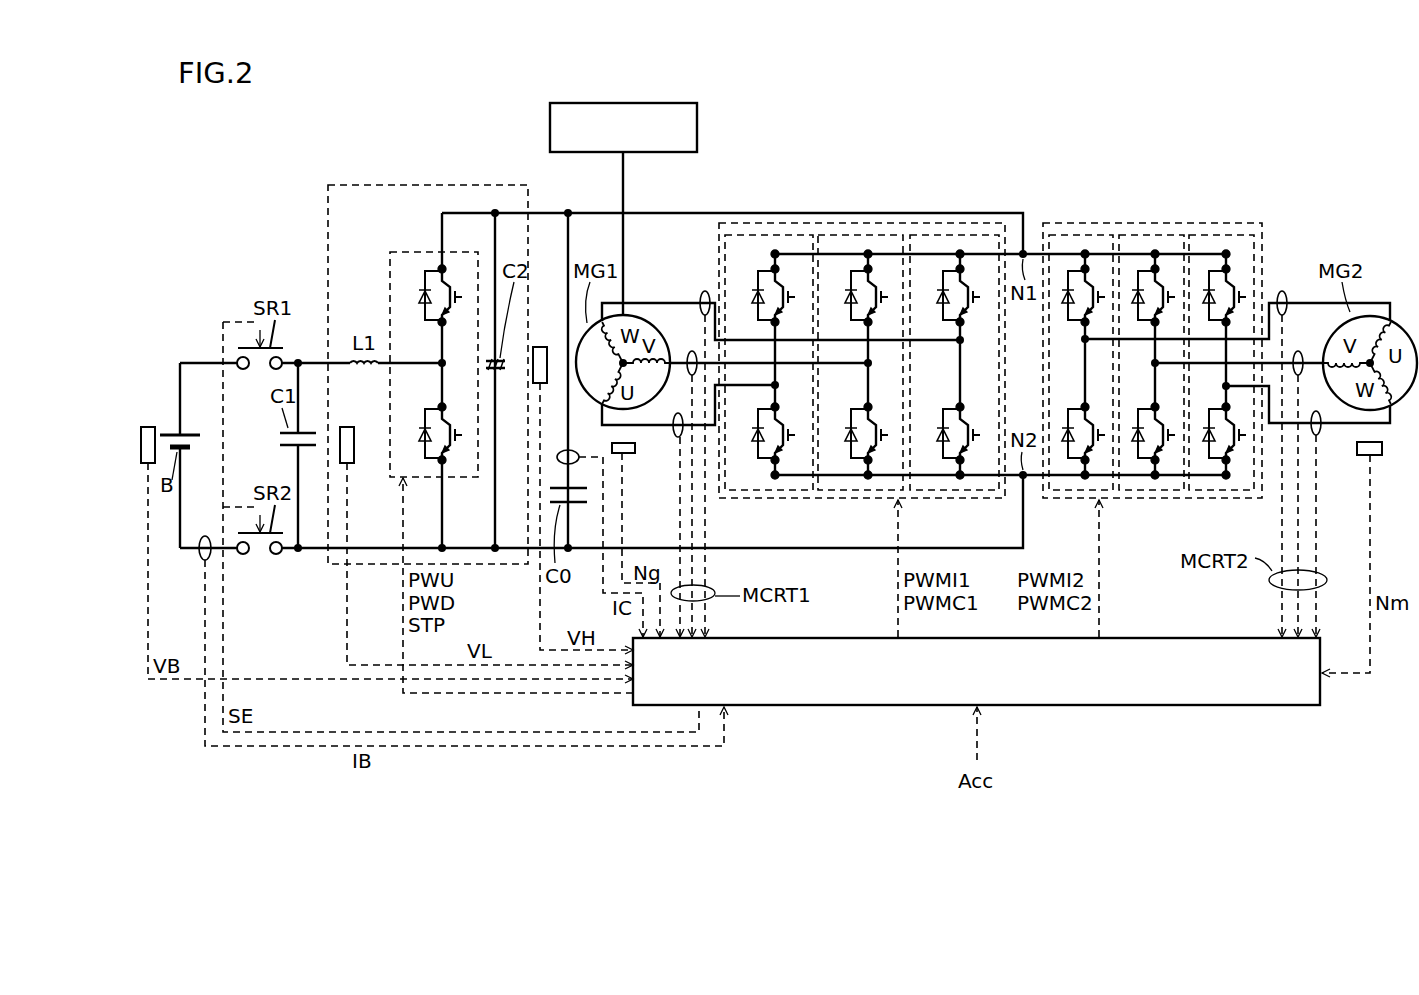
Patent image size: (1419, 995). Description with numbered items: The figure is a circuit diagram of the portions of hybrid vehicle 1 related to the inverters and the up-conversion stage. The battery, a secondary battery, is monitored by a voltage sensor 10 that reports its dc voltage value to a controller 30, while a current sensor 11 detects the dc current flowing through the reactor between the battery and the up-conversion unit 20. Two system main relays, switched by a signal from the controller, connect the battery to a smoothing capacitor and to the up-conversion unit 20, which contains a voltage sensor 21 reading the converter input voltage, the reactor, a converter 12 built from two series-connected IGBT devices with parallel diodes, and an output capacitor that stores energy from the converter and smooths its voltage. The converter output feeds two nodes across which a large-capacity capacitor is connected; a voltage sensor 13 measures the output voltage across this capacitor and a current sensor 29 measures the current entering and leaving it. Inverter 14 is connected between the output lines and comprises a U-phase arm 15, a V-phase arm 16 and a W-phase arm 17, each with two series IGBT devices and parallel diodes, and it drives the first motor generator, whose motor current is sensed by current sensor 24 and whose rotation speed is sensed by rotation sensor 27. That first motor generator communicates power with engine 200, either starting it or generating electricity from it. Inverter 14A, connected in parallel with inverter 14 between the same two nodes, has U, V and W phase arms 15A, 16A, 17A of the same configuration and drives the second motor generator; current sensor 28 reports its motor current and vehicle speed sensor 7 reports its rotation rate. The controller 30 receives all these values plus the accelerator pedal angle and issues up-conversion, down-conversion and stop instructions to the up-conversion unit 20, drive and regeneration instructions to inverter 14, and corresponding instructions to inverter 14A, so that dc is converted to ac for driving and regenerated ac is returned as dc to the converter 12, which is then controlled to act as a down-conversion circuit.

The hybrid vehicle 1 is at (940, 127).
The vehicle speed sensor 7 is at (1365, 458).
The voltage sensor 10 is at (148, 427).
The current sensor 11 is at (208, 536).
The converter 12 is at (411, 251).
The voltage sensor 13 is at (540, 347).
The inverter 14 is at (990, 223).
The inverter 14A is at (1247, 223).
The U-phase arm 15 is at (750, 234).
The V-phase arm 16 is at (842, 234).
The W-phase arm 17 is at (943, 234).
The U-phase arm 15A is at (1062, 234).
The V-phase arm 16A is at (1139, 234).
The W-phase arm 17A is at (1203, 234).
The up-conversion unit 20 is at (482, 185).
The voltage sensor 21 is at (347, 427).
The current sensor 24 is at (703, 290).
The rotation sensor 27 is at (632, 455).
The current sensor 28 is at (1282, 290).
The current sensor 29 is at (574, 450).
The controller 30 is at (1300, 706).
The engine 200 is at (698, 130).